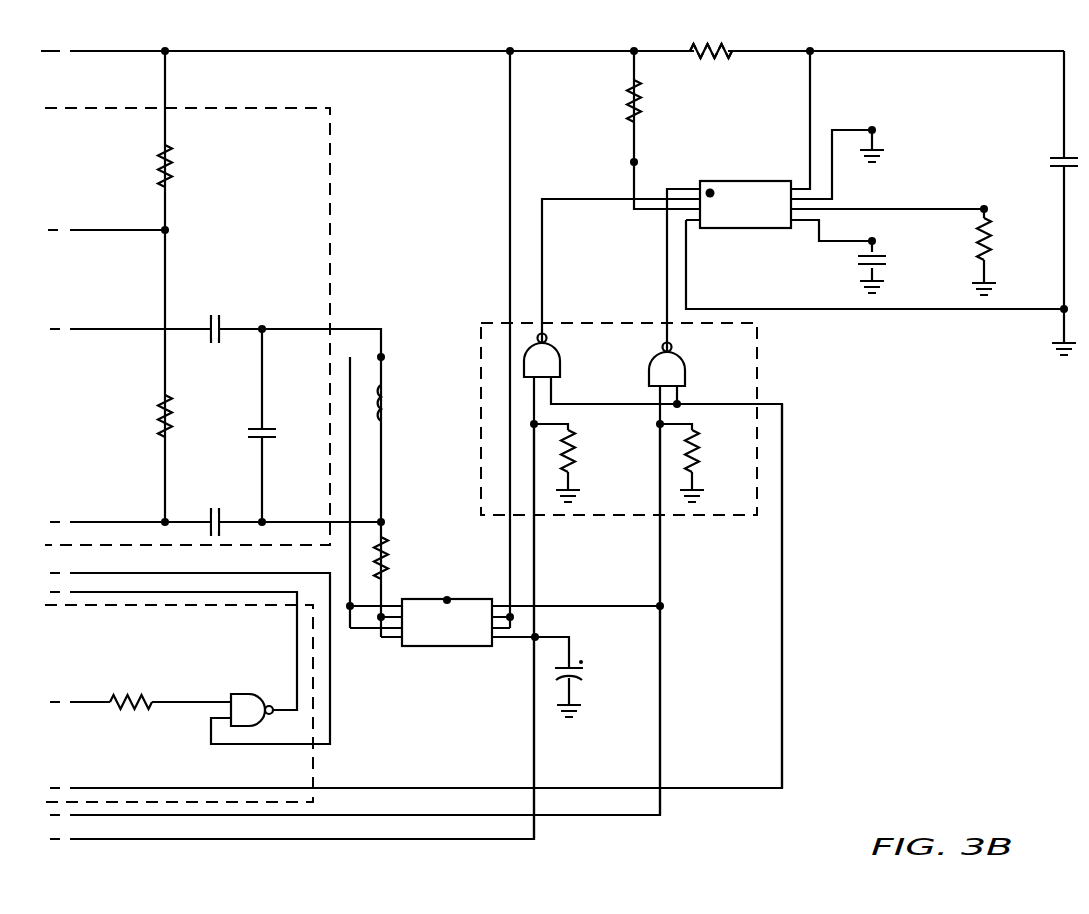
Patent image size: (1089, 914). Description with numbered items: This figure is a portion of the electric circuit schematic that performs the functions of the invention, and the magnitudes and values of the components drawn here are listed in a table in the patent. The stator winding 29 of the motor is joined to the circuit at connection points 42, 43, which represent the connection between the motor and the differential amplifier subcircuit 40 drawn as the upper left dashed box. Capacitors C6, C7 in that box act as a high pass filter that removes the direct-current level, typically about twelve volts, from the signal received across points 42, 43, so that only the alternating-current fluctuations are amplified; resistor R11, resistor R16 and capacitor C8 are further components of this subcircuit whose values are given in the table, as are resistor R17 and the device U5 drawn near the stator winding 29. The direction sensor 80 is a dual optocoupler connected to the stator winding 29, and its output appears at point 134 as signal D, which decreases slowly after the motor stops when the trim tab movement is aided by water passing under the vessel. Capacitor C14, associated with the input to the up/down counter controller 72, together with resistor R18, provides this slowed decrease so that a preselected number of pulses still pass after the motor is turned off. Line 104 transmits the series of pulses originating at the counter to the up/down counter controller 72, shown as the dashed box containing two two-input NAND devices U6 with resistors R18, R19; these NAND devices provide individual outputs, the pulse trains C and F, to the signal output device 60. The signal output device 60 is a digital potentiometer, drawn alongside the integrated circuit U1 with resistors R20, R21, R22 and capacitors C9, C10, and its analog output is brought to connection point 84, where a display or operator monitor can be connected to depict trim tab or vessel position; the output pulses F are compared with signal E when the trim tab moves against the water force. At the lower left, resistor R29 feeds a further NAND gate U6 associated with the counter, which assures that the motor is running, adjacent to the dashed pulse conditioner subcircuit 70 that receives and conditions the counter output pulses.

The differential amplifier subcircuit 40 is at (73, 108).
The resistor R11 is at (173, 168).
The capacitor C6 is at (216, 313).
The resistor R16 is at (195, 412).
The capacitor C8 is at (278, 435).
The capacitor C7 is at (217, 506).
The connection point 42 is at (384, 355).
The stator winding 29 is at (387, 405).
The connection point 43 is at (385, 522).
The resistor R17 is at (388, 565).
The integrated circuit U5 is at (444, 607).
The direction sensor 80 is at (447, 624).
The point 134 is at (530, 638).
The capacitor C14 is at (585, 678).
The resistor R29 is at (135, 700).
The NAND device U6 is at (240, 704).
The pulse conditioner subcircuit 70 is at (313, 757).
The signal D is at (536, 555).
The signal E is at (662, 565).
The line 104 is at (782, 640).
The up/down counter controller 72 is at (757, 368).
The resistor R18 is at (576, 468).
The resistor R19 is at (700, 468).
The pulses C is at (554, 198).
The output pulses F is at (666, 252).
The resistor R20 is at (641, 96).
The resistor R21 is at (716, 45).
The integrated circuit U1 is at (732, 193).
The signal output device 60 is at (745, 209).
The connection point 84 is at (874, 240).
The capacitor C9 is at (886, 262).
The resistor R22 is at (992, 252).
The capacitor C10 is at (1047, 165).